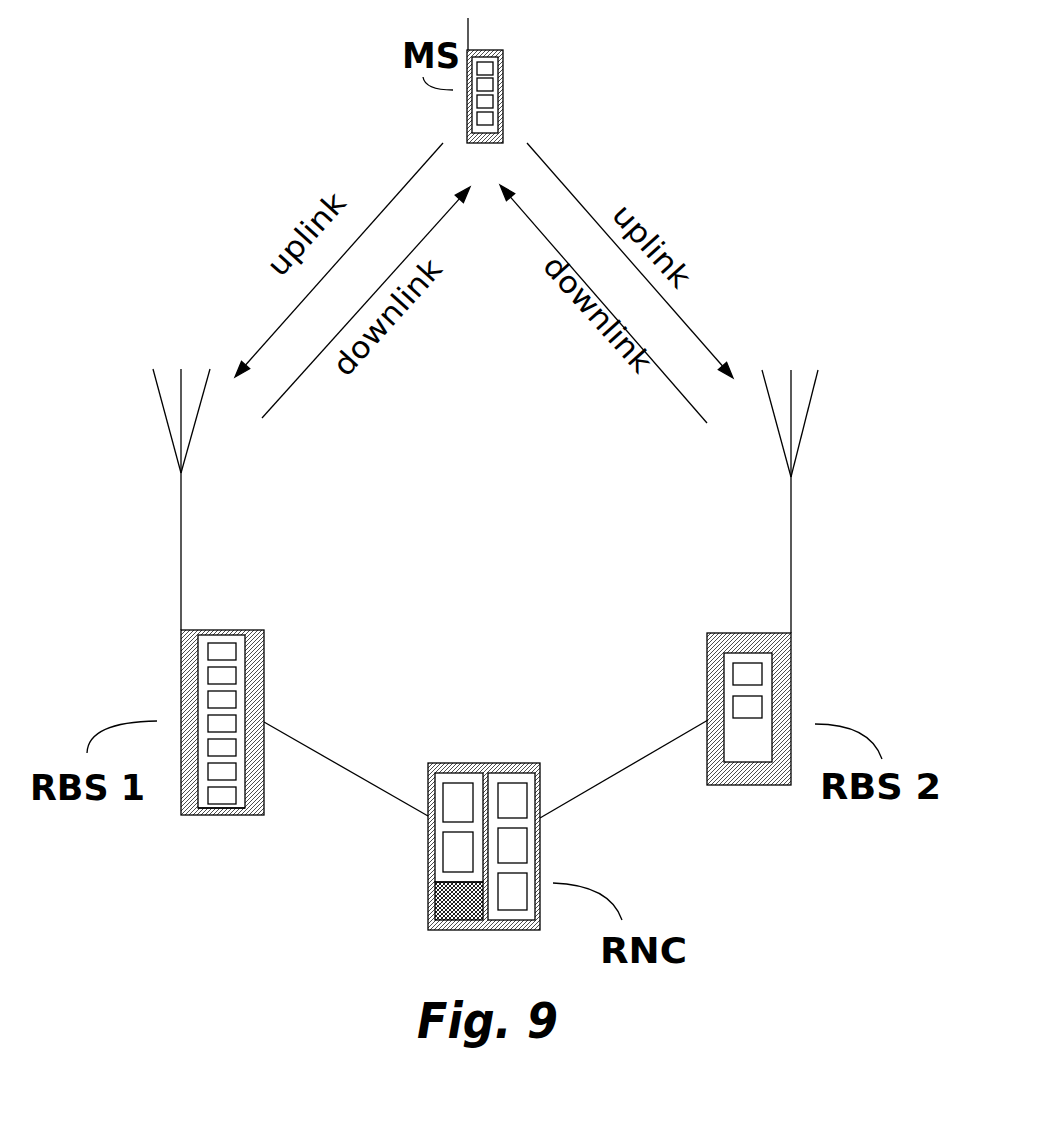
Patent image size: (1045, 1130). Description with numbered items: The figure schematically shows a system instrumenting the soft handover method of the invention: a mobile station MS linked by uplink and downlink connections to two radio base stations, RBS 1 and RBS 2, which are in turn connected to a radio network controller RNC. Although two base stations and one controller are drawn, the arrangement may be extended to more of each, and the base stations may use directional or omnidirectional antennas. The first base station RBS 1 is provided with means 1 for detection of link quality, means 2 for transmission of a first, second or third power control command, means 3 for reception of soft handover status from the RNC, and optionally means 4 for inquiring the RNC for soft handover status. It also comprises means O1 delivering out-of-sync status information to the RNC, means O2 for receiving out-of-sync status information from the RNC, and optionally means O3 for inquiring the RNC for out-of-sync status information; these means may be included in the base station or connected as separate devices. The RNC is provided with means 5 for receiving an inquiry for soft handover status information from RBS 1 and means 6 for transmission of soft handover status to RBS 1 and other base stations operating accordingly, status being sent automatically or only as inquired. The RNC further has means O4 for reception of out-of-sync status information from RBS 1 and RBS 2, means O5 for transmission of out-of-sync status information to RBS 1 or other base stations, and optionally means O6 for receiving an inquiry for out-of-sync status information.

The means for detection of link quality 1 is at (237, 652).
The means for transmission of a power control command 2 is at (237, 673).
The means for reception of soft handover status 3 is at (237, 741).
The means for inquiring an RNC for soft handover status 4 is at (237, 698).
The means for receiving an inquiry for soft handover status information 5 is at (457, 778).
The means for transmission of soft handover status 6 is at (440, 847).
The means delivering out-of-sync status information O1 is at (237, 765).
The means for receiving out-of-sync status information O2 is at (237, 788).
The means for inquiring an RNC for out-of-sync status information O3 is at (225, 808).
The means for reception of out-of-sync status information O4 is at (528, 797).
The means for transmission of out-of-sync status information O5 is at (528, 845).
The means for receiving an inquiry for out-of-sync status information O6 is at (528, 875).